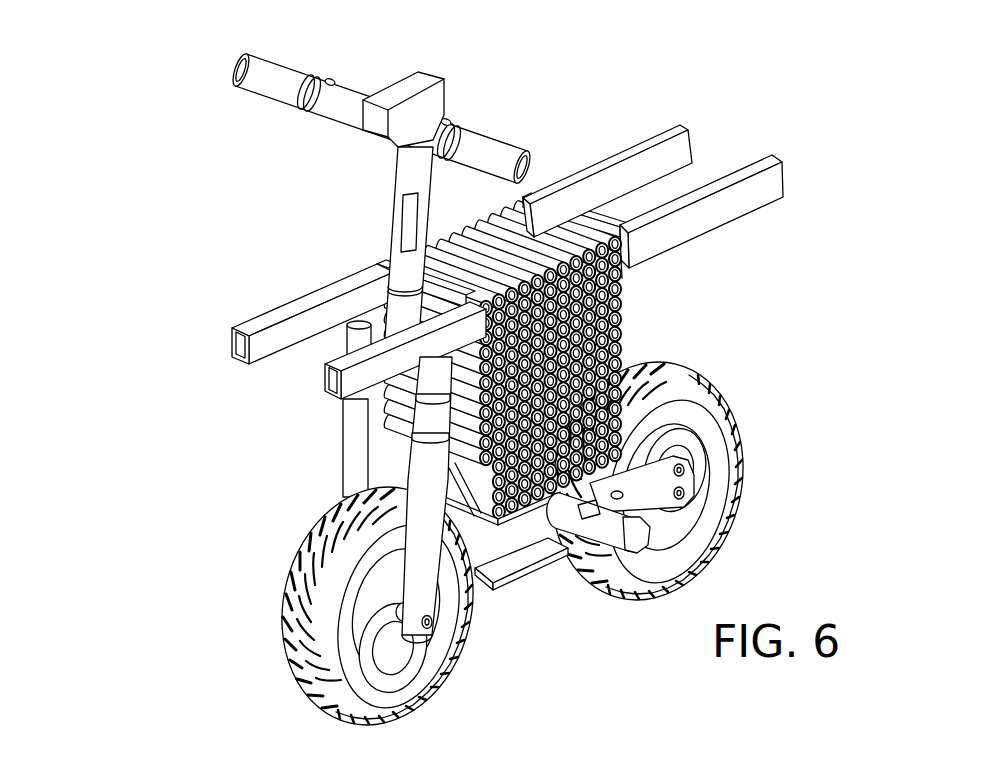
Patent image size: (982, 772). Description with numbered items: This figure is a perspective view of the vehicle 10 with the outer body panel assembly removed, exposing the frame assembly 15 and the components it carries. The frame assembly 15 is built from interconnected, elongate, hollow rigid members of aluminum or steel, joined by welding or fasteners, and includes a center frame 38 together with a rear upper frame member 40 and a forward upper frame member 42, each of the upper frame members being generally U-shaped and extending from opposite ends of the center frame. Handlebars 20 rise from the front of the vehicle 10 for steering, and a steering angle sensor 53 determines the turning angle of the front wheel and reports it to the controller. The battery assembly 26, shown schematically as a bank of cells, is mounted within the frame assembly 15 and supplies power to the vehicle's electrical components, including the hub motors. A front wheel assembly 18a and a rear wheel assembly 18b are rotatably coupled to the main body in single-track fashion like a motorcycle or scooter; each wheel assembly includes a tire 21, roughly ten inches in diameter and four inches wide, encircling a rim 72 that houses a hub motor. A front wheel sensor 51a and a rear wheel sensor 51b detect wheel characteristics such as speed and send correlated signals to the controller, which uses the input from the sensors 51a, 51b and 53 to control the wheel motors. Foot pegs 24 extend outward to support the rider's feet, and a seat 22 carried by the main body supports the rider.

The vehicle 10 is at (130, 252).
The frame assembly 15 is at (283, 298).
The handlebars 20 is at (344, 90).
The steering angle sensor 53 is at (410, 208).
The center frame 38 is at (540, 232).
The rear upper frame member 40 is at (615, 156).
The battery assembly 26 is at (622, 317).
The forward upper frame member 42 is at (356, 383).
The front wheel sensor 51a is at (432, 626).
The rear wheel sensor 51b is at (683, 487).
The front wheel assembly 18a is at (290, 665).
The rear wheel assembly 18b is at (715, 541).
The rim 72 is at (667, 534).
The tire 21 is at (636, 594).
The foot pegs 24 is at (609, 538).
The seat 22 is at (521, 655).